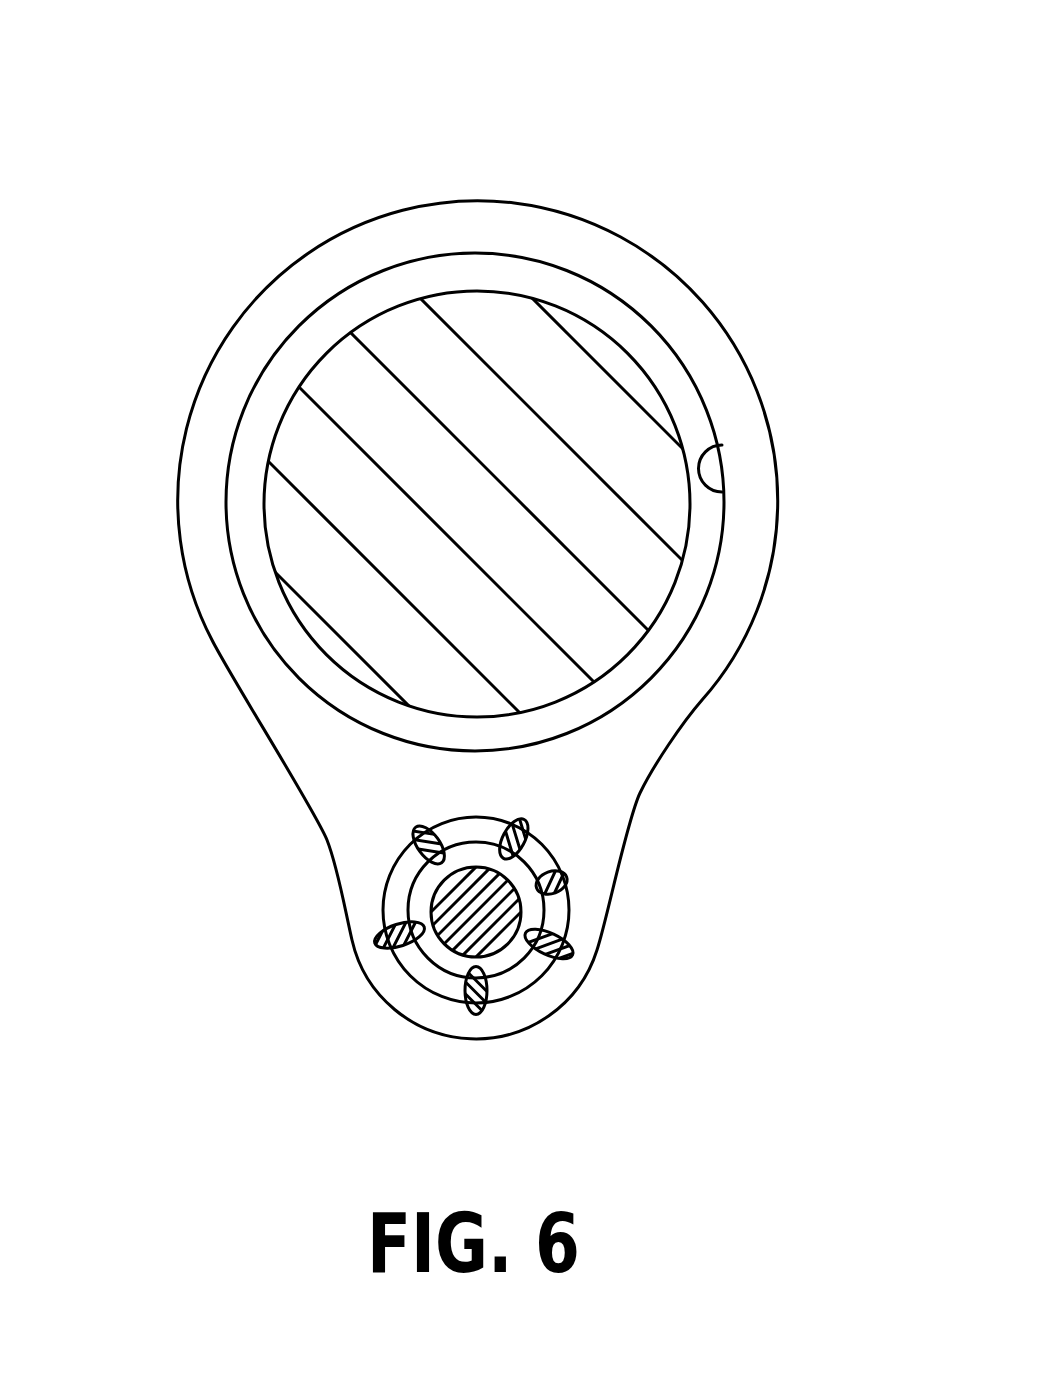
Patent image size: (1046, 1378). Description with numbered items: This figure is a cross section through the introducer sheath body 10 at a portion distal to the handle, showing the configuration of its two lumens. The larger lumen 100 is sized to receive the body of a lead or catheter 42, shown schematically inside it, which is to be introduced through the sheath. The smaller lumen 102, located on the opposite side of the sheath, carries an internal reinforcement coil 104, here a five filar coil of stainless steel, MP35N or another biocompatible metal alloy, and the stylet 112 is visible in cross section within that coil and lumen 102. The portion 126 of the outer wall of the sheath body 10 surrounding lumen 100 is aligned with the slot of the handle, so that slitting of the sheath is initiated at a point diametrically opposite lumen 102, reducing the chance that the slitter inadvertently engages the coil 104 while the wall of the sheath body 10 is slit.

The sheath body 10 is at (620, 237).
The body of a lead or catheter 42 is at (372, 315).
The lumen 100 is at (723, 492).
The lumen 102 is at (547, 902).
The internal reinforcement coil 104 is at (463, 990).
The stylet 112 is at (458, 923).
The portion of the outer wall 126 is at (455, 160).